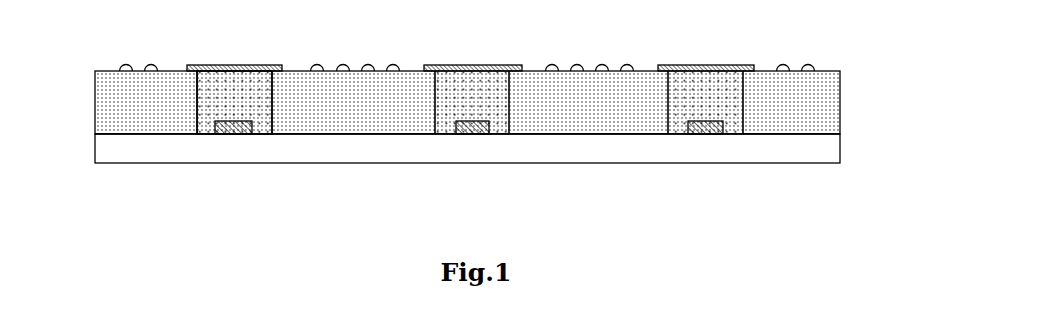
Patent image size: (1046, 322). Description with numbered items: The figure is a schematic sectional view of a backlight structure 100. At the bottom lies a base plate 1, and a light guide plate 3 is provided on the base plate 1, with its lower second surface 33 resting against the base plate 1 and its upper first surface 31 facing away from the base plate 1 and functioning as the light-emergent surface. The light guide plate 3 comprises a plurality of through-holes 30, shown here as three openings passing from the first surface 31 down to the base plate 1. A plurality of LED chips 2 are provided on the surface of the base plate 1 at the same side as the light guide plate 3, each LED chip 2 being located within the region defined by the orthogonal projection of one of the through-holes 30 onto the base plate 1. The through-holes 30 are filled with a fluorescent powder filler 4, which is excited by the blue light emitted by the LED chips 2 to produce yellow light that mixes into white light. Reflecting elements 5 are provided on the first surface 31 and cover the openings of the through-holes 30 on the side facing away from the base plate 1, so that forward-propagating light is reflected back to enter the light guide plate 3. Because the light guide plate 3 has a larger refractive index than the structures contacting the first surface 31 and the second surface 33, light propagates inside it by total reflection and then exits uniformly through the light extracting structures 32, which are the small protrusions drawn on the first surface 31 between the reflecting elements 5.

The backlight structure 100 is at (461, 108).
The base plate 1 is at (840, 148).
The LED chip 2 is at (233, 134).
The light guide plate 3 is at (840, 103).
The fluorescent powder filler 4 is at (472, 78).
The reflecting element 5 is at (230, 64).
The through-hole 30 is at (272, 118).
The first surface 31 is at (822, 70).
The light extracting structure 32 is at (123, 68).
The second surface 33 is at (763, 136).